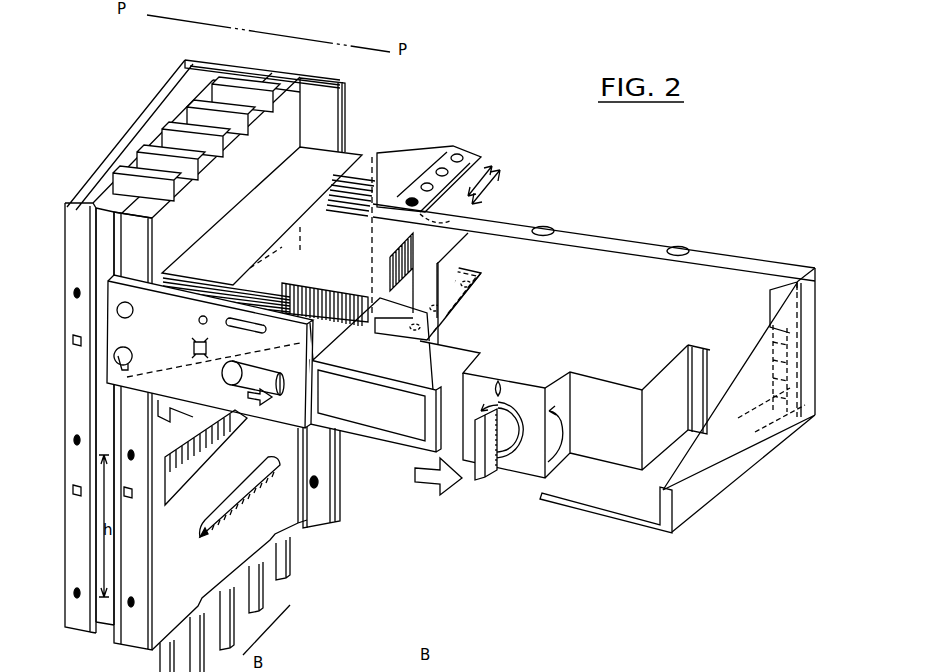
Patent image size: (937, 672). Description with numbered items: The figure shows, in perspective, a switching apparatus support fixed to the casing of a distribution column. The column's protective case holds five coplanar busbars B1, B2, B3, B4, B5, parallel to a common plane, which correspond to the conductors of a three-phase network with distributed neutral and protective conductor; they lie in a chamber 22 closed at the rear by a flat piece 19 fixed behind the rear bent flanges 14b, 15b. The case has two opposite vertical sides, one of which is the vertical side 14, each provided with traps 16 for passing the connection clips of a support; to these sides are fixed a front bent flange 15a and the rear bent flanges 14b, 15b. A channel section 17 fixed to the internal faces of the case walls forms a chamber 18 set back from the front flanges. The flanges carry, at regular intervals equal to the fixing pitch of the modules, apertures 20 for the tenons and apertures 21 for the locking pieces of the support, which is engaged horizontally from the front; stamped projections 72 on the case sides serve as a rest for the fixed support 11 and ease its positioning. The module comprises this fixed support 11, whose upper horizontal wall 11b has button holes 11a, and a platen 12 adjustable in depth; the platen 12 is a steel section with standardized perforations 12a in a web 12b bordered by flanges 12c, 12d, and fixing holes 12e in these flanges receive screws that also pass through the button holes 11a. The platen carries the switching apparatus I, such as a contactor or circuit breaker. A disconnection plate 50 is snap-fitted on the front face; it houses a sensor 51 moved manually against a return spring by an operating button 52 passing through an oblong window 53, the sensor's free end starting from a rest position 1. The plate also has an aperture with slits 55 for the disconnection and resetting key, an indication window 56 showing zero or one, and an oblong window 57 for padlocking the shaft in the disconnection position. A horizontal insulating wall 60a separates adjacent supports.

The rest position 1 is at (519, 430).
The fixed support 11 is at (420, 148).
The button holes 11a is at (422, 183).
The upper horizontal wall 11b is at (300, 196).
The platen 12 is at (618, 236).
The standardized perforations 12a is at (778, 280).
The web 12b is at (760, 343).
The flange 12c is at (812, 327).
The flange 12d is at (801, 434).
The fixing holes 12e is at (477, 212).
The vertical side 14 is at (192, 573).
The rear bent flange 14b is at (322, 126).
The front bent flange 15a is at (75, 625).
The rear bent flange 15b is at (185, 82).
The trap 16 is at (198, 462).
The channel section 17 is at (100, 636).
The chamber 18 is at (116, 430).
The flat piece 19 is at (283, 75).
The apertures 20 is at (76, 288).
The apertures 21 is at (76, 350).
The chamber of bars 22 is at (243, 73).
The disconnection plate 50 is at (164, 356).
The sensor 51 is at (393, 444).
The operating button 52 is at (222, 366).
The oblong window 53 is at (272, 396).
The aperture with slits 55 is at (198, 358).
The indication window 56 is at (199, 320).
The oblong window 57 is at (258, 345).
The horizontal insulating wall 60a is at (626, 505).
The projections 72 is at (268, 482).
The busbar B1 is at (246, 94).
The busbar B2 is at (221, 117).
The busbar B3 is at (196, 139).
The busbar B4 is at (171, 162).
The busbar B5 is at (174, 198).
The switching apparatus I is at (592, 331).